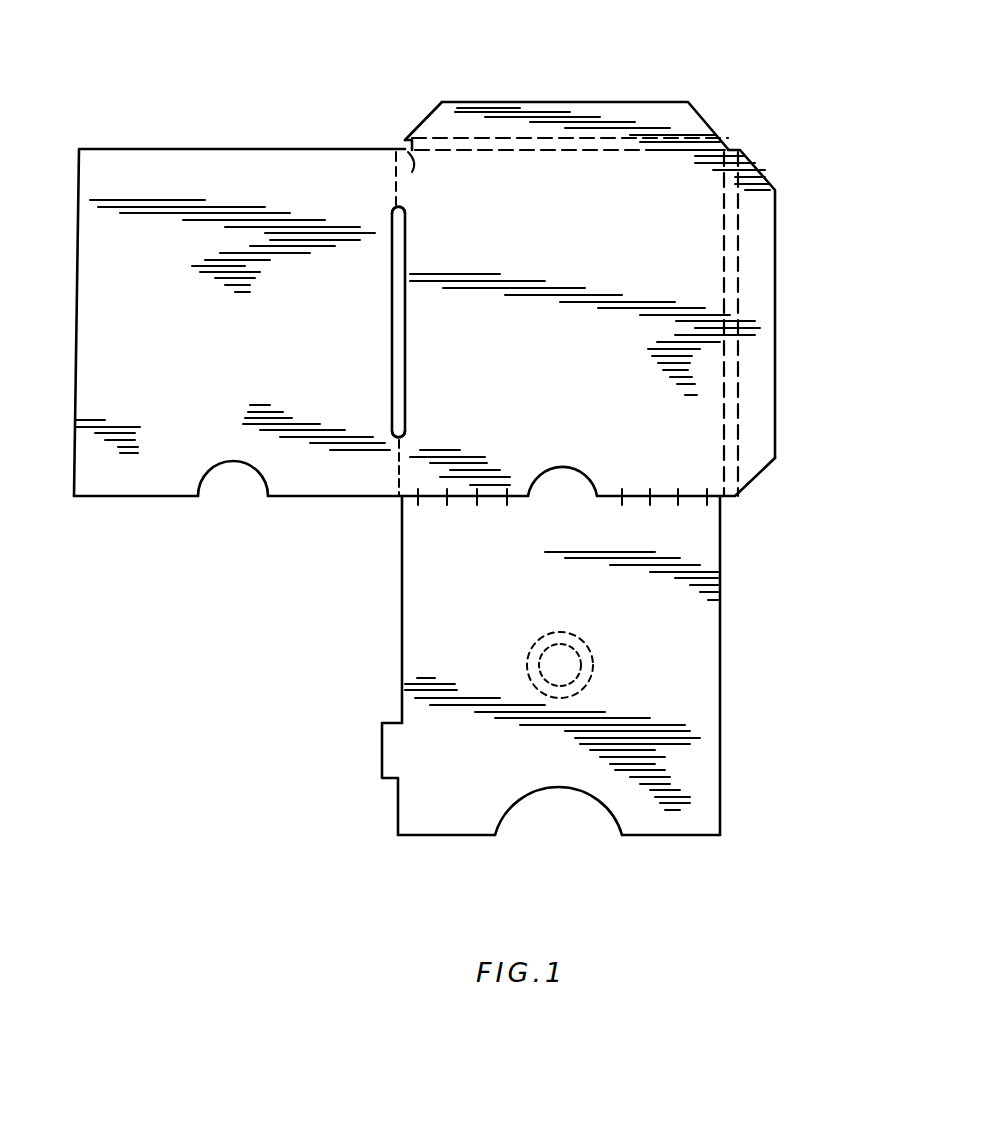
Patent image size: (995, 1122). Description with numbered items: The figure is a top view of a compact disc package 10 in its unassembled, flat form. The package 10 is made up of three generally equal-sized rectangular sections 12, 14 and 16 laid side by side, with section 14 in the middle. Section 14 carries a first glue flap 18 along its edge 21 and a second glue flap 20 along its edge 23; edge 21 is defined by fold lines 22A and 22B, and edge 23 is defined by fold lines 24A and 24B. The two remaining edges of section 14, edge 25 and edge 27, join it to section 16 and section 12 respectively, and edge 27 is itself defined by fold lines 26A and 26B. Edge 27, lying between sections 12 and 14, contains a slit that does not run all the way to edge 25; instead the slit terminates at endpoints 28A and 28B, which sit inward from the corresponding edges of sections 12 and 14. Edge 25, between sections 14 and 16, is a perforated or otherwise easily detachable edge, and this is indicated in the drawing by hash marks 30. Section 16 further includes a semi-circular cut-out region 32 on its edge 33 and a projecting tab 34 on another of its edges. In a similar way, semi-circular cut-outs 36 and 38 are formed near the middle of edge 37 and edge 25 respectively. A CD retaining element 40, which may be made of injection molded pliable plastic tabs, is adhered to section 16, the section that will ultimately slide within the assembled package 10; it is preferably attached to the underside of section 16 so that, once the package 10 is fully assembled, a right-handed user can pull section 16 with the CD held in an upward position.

The CD package 10 is at (258, 563).
The rectangular section 12 is at (232, 160).
The rectangular section 14 is at (729, 150).
The rectangular section 16 is at (700, 656).
The first glue flap 18 is at (570, 110).
The second glue flap 20 is at (768, 258).
The edge 21 is at (408, 148).
The fold line 22A is at (440, 135).
The fold line 22B is at (510, 137).
The edge 23 is at (742, 478).
The fold line 24A is at (738, 370).
The fold line 24B is at (724, 420).
The edge 25 is at (688, 505).
The fold line 26A is at (405, 158).
The fold line 26B is at (410, 140).
The edge 27 is at (385, 490).
The slit endpoint 28A is at (397, 205).
The slit endpoint 28B is at (406, 437).
The hash marks 30 is at (470, 497).
The semi-circular cut-out region 32 is at (555, 790).
The edge 33 is at (690, 836).
The projecting tab 34 is at (383, 768).
The semi-circular cut-out 36 is at (233, 466).
The edge 37 is at (131, 498).
The semi-circular cut-out 38 is at (562, 470).
The CD retaining element 40 is at (592, 686).